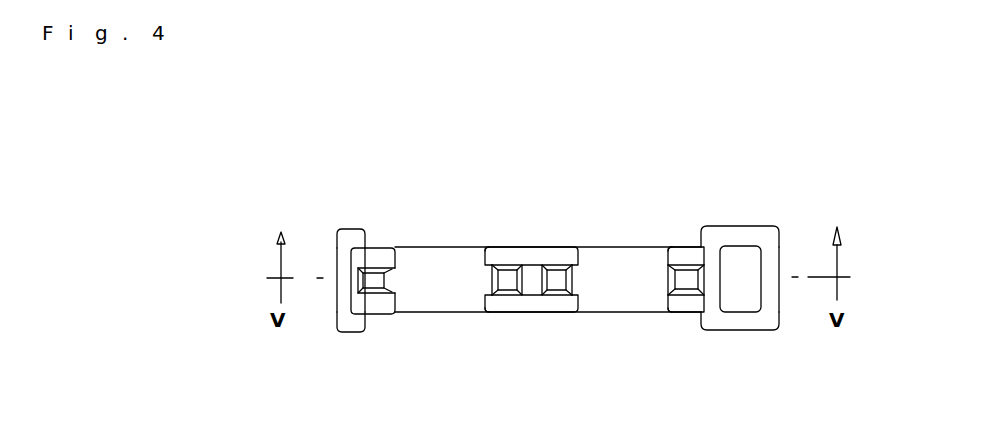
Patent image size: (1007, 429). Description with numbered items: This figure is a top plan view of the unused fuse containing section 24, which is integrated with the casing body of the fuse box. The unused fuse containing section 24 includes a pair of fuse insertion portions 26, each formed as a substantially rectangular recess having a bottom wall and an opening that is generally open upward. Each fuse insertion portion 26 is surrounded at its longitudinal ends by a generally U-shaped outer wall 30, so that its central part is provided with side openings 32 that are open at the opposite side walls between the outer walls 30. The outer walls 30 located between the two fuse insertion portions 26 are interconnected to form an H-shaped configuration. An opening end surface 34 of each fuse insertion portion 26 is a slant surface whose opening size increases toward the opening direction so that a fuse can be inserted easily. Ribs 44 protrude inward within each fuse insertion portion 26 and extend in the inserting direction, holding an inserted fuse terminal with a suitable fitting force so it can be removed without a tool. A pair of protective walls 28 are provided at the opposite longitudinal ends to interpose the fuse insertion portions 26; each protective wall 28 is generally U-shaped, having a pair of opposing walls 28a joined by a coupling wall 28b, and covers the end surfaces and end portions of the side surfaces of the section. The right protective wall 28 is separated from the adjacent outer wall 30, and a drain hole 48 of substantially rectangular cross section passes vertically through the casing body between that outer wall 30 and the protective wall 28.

The unused fuse containing section 24 is at (735, 152).
The fuse insertion portion 26 is at (395, 272).
The protective wall 28 is at (557, 288).
The opposing wall 28a is at (352, 242).
The coupling wall 28b is at (340, 296).
The outer wall 30 is at (374, 300).
The side opening 32 is at (474, 250).
The opening end surface 34 is at (374, 273).
The rib 44 is at (501, 273).
The drain hole 48 is at (728, 295).